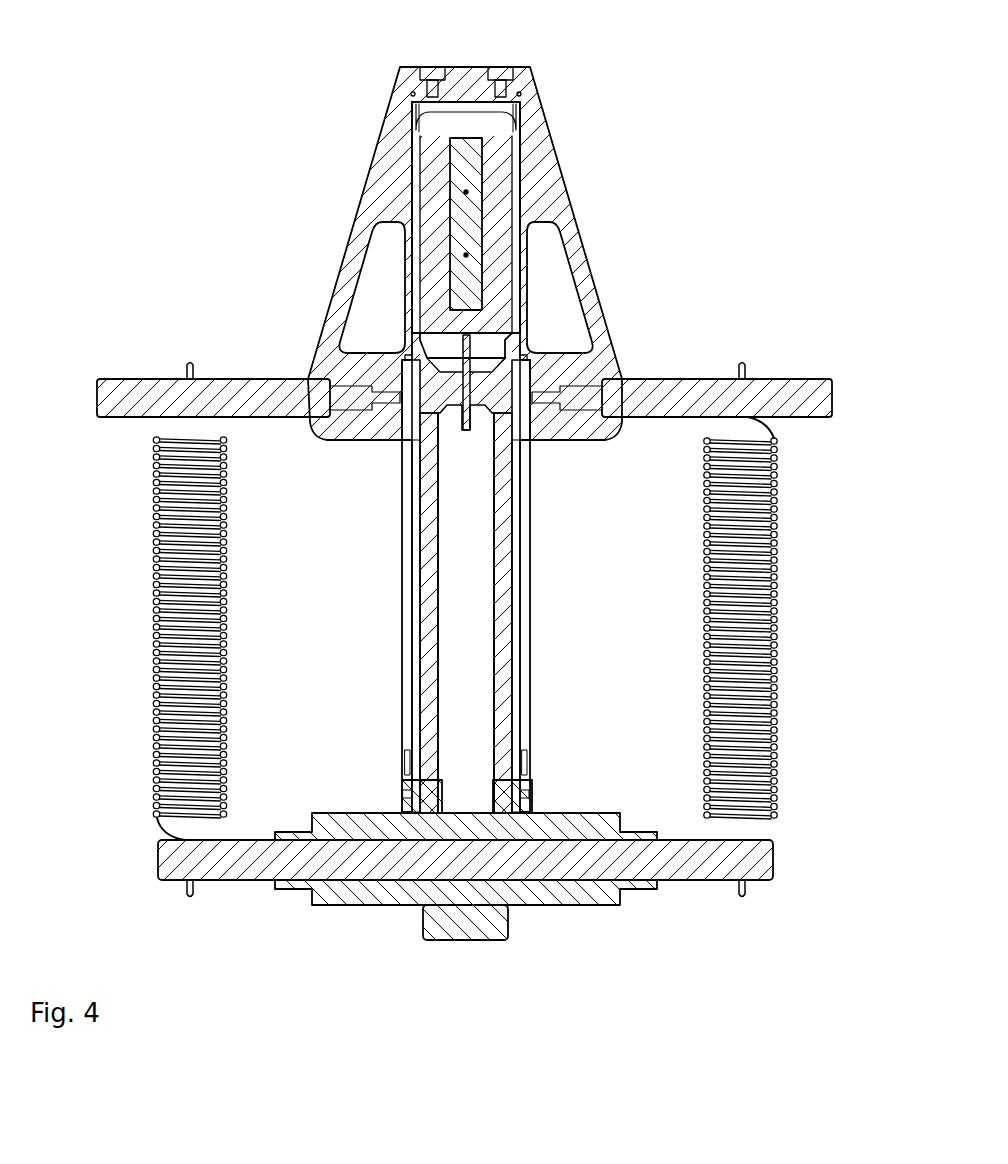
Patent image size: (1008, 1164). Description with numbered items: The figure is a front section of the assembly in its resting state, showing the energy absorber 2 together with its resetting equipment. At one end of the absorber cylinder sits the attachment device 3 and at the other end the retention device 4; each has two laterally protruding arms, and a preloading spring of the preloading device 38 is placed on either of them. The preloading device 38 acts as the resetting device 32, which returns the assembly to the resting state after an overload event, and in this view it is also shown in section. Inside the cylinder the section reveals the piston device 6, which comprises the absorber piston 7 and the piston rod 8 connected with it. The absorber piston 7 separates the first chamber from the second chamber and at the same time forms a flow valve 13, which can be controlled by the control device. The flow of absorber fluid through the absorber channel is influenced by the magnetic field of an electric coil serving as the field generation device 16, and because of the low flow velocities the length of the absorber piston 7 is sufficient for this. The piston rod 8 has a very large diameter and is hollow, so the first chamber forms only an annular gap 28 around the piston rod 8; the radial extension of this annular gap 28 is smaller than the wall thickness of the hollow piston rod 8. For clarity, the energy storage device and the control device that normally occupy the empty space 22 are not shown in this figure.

The energy absorber 2 is at (660, 165).
The attachment device 3 is at (392, 137).
The retention device 4 is at (665, 882).
The piston device 6 is at (500, 162).
The absorber piston 7 is at (493, 190).
The piston rod 8 is at (513, 527).
The flow valve 13 is at (366, 316).
The field generation device 16 is at (432, 187).
The empty space 22 is at (468, 692).
The annular gap 28 is at (522, 604).
The resetting device 32 is at (178, 615).
The preloading device 38 is at (750, 620).